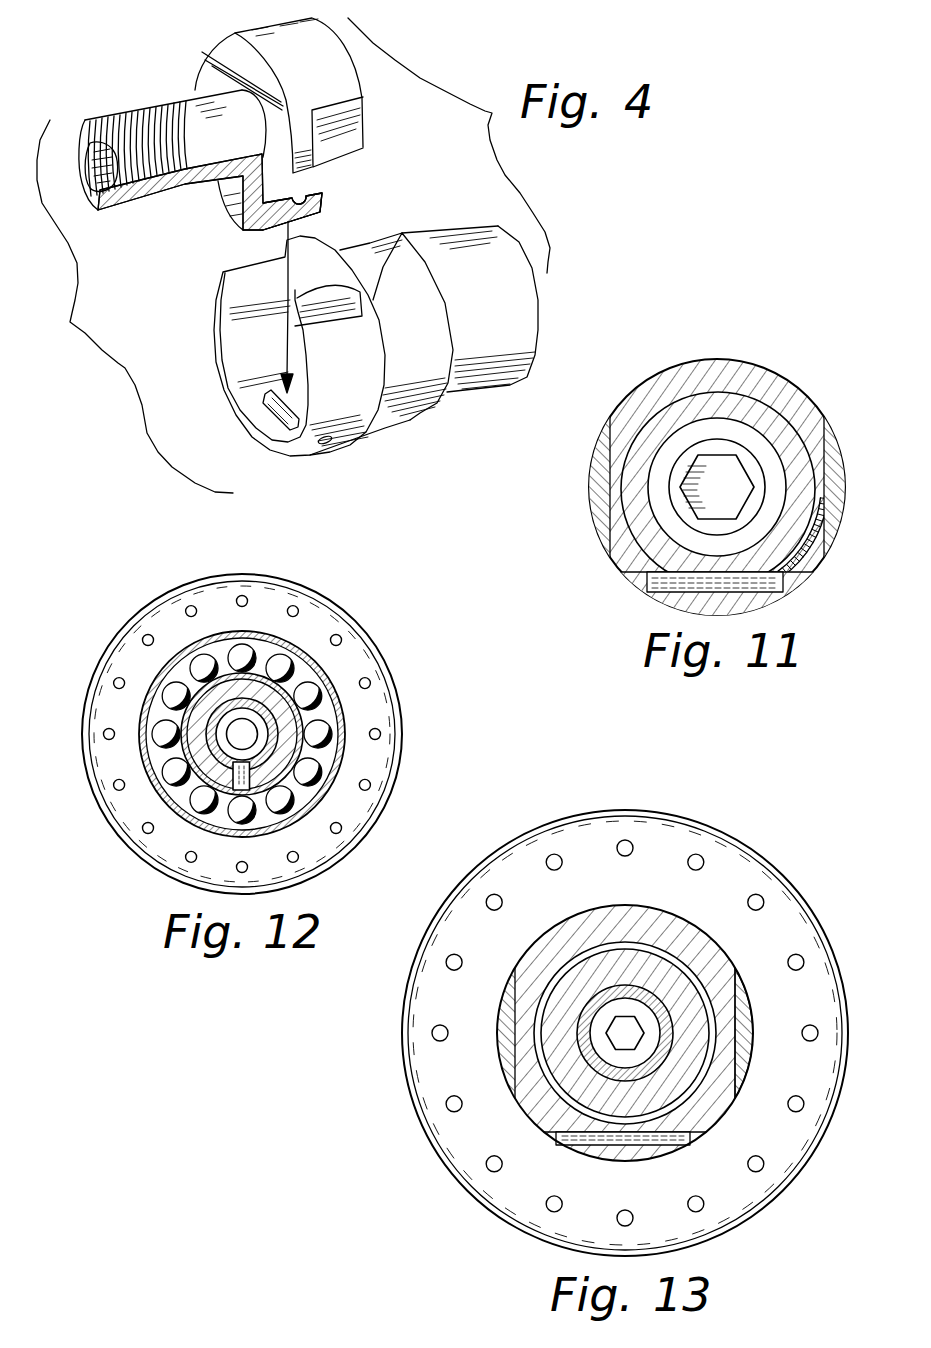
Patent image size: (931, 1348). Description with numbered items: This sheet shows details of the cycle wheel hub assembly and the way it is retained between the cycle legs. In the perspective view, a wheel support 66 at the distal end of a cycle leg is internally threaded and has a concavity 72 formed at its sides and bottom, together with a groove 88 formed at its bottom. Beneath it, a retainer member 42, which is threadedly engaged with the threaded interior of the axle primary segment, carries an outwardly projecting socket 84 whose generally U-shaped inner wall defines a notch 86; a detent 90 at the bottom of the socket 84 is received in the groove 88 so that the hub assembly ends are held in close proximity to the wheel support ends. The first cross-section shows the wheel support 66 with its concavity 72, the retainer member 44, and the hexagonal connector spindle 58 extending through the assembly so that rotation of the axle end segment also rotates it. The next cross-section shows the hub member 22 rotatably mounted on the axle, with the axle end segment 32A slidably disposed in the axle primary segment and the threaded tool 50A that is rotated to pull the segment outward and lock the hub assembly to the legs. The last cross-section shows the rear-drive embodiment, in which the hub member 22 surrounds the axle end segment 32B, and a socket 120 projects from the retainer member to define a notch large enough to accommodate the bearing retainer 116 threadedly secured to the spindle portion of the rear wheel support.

In FIG. 12, the hub member 22 is at (362, 622).
In FIG. 13, the hub member 22 is at (789, 881).
In FIG. 4, the retainer member 42 is at (455, 342).
In FIG. 11, the retainer member 44 is at (727, 461).
In FIG. 11, the connector spindle 58 is at (777, 449).
In FIG. 4, the wheel support 66 is at (240, 95).
In FIG. 11, the wheel support 66 is at (717, 473).
In FIG. 4, the concavity 72 is at (360, 132).
In FIG. 11, the concavity 72 is at (676, 487).
In FIG. 4, the socket 84 is at (378, 361).
In FIG. 4, the notch 86 is at (262, 346).
In FIG. 4, the groove 88 is at (329, 211).
In FIG. 4, the detent 90 is at (233, 418).
In FIG. 12, the axle end segment 32A is at (304, 734).
In FIG. 12, the tool 50A is at (325, 734).
In FIG. 13, the bearing retainer 116 is at (636, 972).
In FIG. 13, the axle end segment 32B is at (507, 1033).
In FIG. 13, the socket 120 is at (546, 1072).